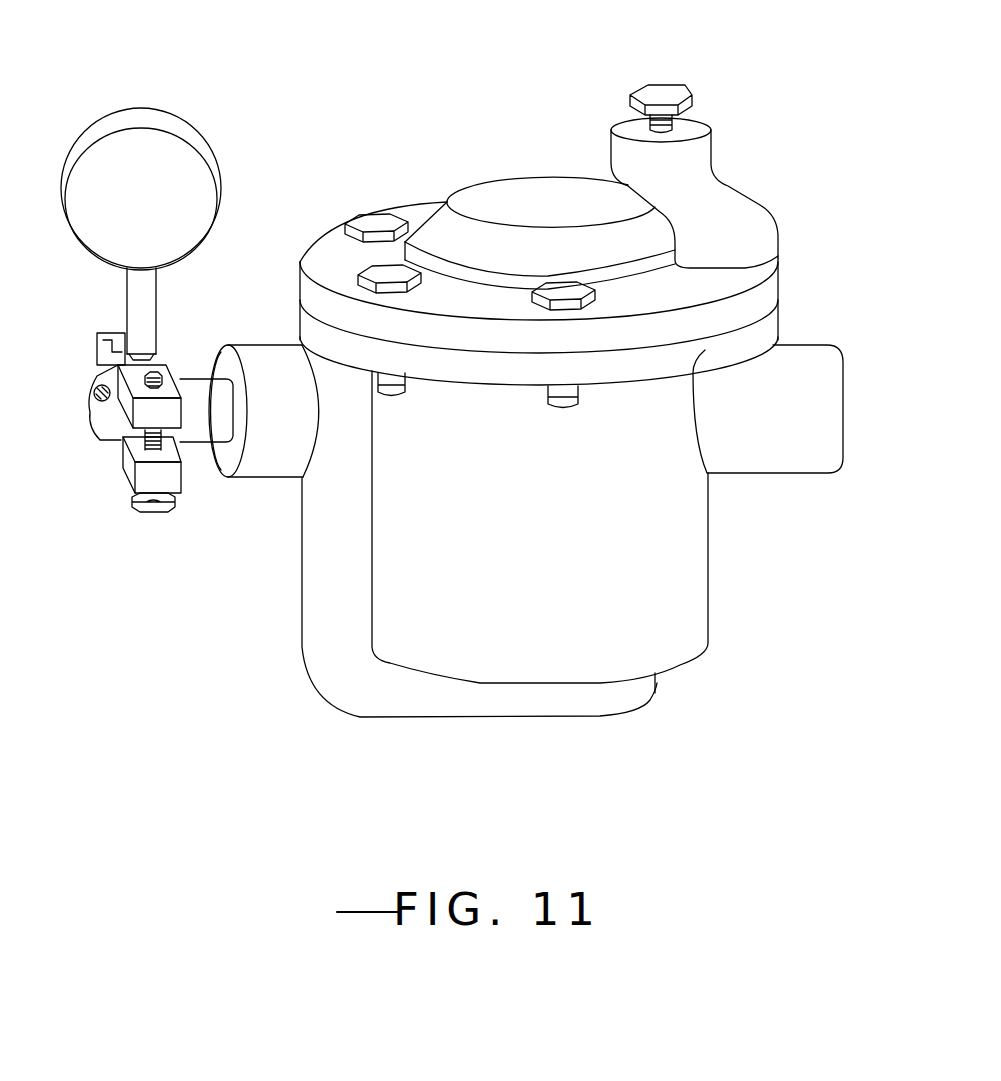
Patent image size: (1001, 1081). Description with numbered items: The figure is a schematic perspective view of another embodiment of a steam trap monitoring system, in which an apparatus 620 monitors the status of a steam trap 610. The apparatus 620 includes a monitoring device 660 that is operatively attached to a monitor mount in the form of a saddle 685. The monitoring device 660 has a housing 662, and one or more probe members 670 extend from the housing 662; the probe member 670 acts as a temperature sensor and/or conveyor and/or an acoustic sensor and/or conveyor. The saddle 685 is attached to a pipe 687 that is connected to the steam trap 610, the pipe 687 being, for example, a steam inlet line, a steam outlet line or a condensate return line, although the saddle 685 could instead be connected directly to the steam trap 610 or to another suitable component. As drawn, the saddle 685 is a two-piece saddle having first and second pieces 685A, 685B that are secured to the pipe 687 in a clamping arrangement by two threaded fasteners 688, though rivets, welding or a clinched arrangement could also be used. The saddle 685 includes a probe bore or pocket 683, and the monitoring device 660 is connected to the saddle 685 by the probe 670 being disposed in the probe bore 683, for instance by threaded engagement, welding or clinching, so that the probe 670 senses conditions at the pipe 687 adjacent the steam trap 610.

The steam trap 610 is at (738, 545).
The apparatus 620 is at (494, 92).
The monitoring device 660 is at (200, 209).
The housing 662 is at (140, 107).
The probe member 670 is at (157, 287).
The probe bore 683 is at (140, 350).
The saddle 685 is at (164, 427).
The first piece 685A is at (106, 357).
The second piece 685B is at (183, 478).
The pipe 687 is at (184, 377).
The threaded fasteners 688 is at (118, 345).